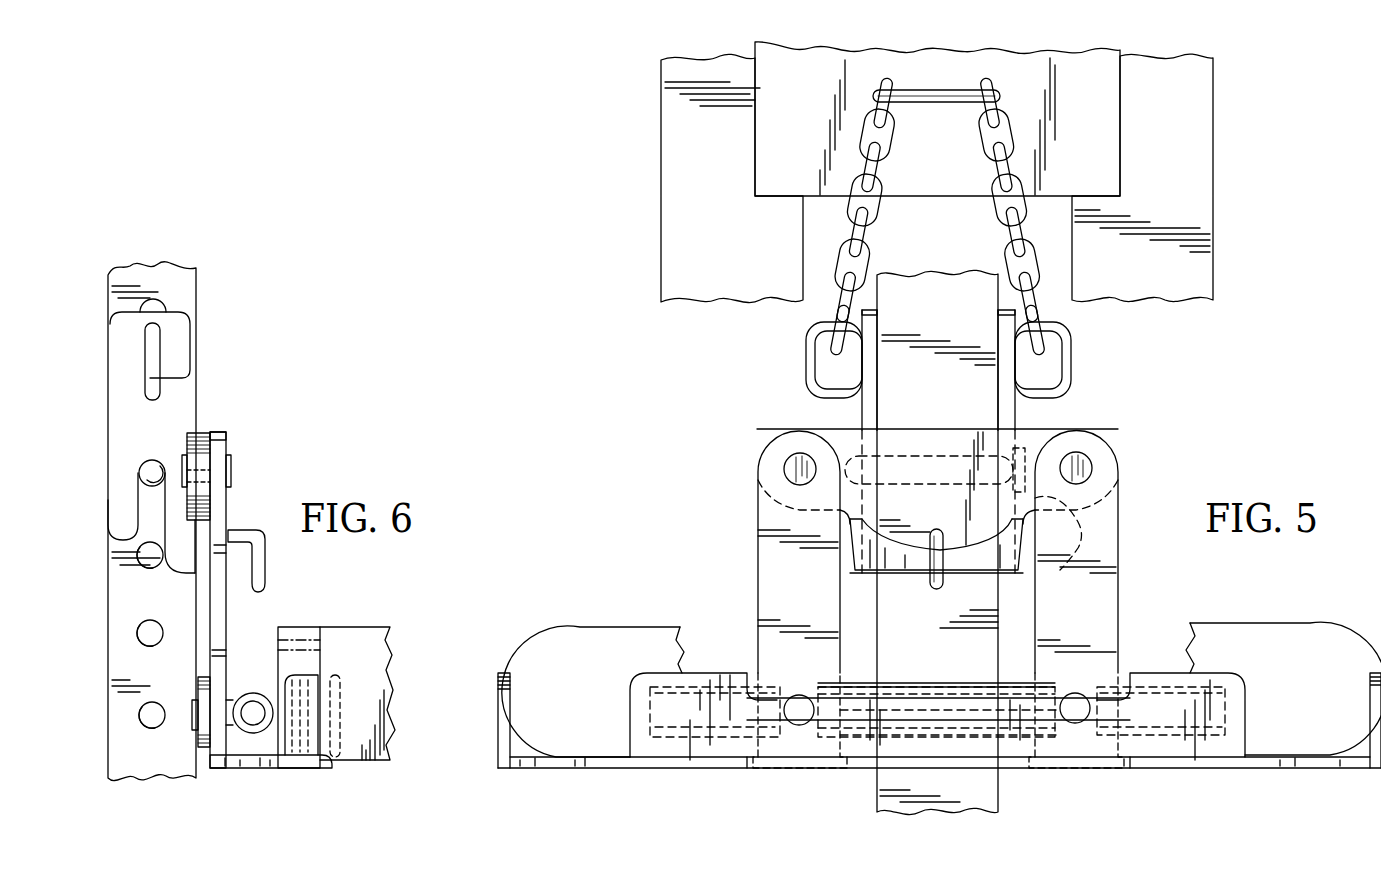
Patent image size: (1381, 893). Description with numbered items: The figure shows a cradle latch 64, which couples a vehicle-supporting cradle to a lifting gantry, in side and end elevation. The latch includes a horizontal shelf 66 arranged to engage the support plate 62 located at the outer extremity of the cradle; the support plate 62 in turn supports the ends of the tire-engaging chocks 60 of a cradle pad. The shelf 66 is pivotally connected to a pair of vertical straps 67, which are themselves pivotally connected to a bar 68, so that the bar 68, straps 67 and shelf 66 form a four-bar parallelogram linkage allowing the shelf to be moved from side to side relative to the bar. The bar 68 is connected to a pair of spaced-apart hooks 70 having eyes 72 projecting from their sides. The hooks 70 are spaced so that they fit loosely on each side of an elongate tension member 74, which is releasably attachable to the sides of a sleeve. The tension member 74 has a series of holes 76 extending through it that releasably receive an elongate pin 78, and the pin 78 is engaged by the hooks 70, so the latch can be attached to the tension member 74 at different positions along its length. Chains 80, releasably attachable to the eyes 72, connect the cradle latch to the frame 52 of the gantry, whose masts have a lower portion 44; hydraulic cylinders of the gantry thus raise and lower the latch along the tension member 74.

In FIG. 5, the lower portion 44 is at (678, 190).
In FIG. 5, the frame 52 is at (1107, 52).
In FIG. 6, the tire-engaging chock 60 is at (376, 652).
In FIG. 6, the support plate 62 is at (304, 634).
In FIG. 5, the support plate 62 is at (1333, 642).
In FIG. 6, the cradle latch 64 is at (285, 484).
In FIG. 5, the cradle latch 64 is at (748, 467).
In FIG. 6, the horizontal shelf 66 is at (308, 775).
In FIG. 5, the horizontal shelf 66 is at (600, 770).
In FIG. 6, the vertical strap 67 is at (222, 624).
In FIG. 5, the vertical strap 67 is at (772, 566).
In FIG. 6, the bar 68 is at (203, 435).
In FIG. 5, the bar 68 is at (1030, 437).
In FIG. 6, the hook 70 is at (130, 372).
In FIG. 5, the hook 70 is at (868, 410).
In FIG. 6, the eye 72 is at (193, 378).
In FIG. 5, the eye 72 is at (800, 366).
In FIG. 6, the tension member 74 is at (183, 301).
In FIG. 5, the tension member 74 is at (956, 638).
In FIG. 6, the hole 76 is at (150, 625).
In FIG. 6, the pin 78 is at (150, 466).
In FIG. 5, the pin 78 is at (1076, 505).
In FIG. 5, the chain 80 is at (1004, 228).